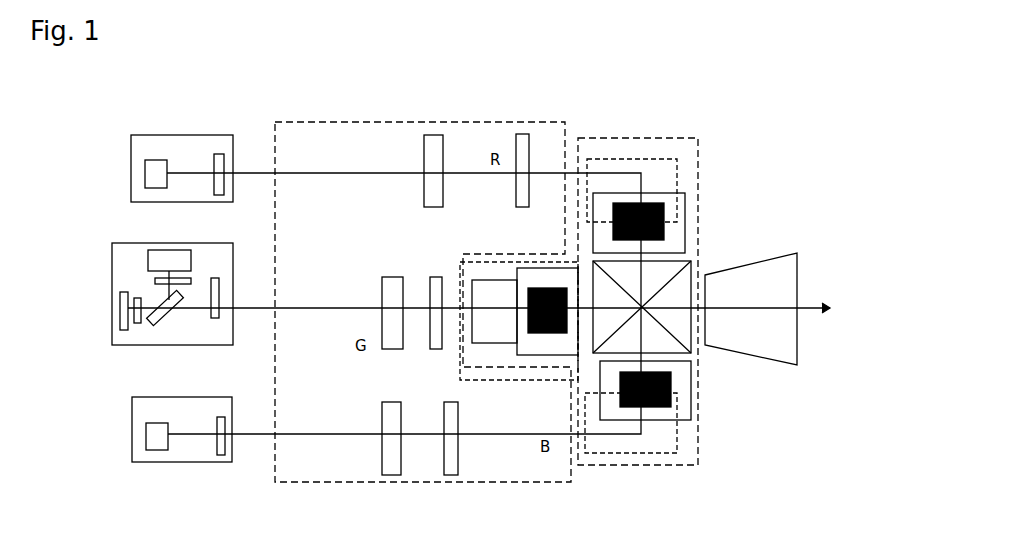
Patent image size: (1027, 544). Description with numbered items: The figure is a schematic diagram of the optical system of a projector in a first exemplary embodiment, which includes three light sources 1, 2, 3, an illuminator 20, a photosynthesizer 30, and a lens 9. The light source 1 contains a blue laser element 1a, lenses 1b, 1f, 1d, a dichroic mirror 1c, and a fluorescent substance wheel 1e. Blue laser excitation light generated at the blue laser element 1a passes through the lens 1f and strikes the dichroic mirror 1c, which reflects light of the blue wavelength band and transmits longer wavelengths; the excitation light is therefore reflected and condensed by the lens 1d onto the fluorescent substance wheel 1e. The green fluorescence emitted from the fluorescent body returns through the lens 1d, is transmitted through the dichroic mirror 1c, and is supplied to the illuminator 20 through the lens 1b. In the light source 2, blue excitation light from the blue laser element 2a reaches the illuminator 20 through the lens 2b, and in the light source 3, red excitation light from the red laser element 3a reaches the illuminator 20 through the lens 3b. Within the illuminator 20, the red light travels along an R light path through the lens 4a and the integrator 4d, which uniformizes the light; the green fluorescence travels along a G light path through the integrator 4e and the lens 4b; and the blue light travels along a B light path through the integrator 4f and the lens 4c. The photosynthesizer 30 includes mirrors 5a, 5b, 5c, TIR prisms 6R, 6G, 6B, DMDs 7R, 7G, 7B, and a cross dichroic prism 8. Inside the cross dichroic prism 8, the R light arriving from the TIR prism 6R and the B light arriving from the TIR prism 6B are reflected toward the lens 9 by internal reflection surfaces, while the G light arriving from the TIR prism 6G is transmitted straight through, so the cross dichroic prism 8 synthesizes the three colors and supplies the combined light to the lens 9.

The light source 1 is at (235, 252).
The blue laser element 1a is at (169, 250).
The lens 1b is at (219, 318).
The dichroic mirror 1c is at (170, 314).
The lens 1d is at (138, 323).
The fluorescent substance wheel 1e is at (120, 317).
The lens 1f is at (155, 281).
The light source 2 is at (210, 462).
The blue laser element 2a is at (152, 450).
The lens 2b is at (225, 455).
The light source 3 is at (181, 135).
The red laser element 3a is at (152, 160).
The lens 3b is at (220, 154).
The lens 4a is at (522, 134).
The lens 4b is at (437, 277).
The lens 4c is at (455, 475).
The integrator 4d is at (433, 135).
The integrator 4e is at (392, 277).
The integrator 4f is at (392, 475).
The mirror 5a is at (663, 159).
The mirror 5b is at (480, 330).
The mirror 5c is at (662, 453).
The TIR prism 6R is at (688, 215).
The TIR prism 6G is at (517, 350).
The TIR prism 6B is at (692, 420).
The DMD 7R is at (665, 232).
The DMD 7G is at (547, 333).
The DMD 7B is at (672, 390).
The cross dichroic prism 8 is at (691, 262).
The lens 9 is at (770, 362).
The illuminator 20 is at (565, 122).
The photosynthesizer 30 is at (622, 138).